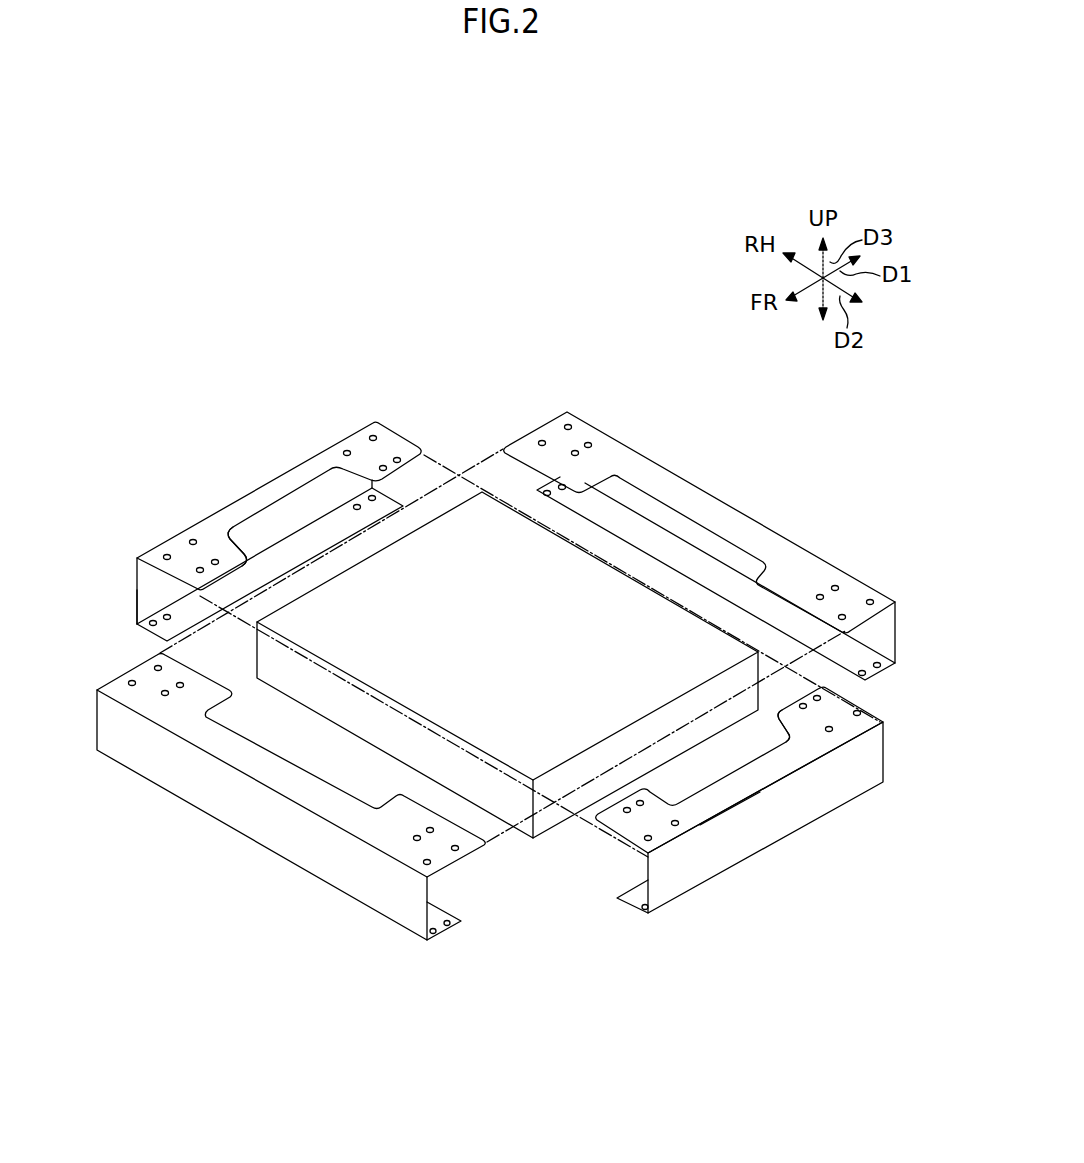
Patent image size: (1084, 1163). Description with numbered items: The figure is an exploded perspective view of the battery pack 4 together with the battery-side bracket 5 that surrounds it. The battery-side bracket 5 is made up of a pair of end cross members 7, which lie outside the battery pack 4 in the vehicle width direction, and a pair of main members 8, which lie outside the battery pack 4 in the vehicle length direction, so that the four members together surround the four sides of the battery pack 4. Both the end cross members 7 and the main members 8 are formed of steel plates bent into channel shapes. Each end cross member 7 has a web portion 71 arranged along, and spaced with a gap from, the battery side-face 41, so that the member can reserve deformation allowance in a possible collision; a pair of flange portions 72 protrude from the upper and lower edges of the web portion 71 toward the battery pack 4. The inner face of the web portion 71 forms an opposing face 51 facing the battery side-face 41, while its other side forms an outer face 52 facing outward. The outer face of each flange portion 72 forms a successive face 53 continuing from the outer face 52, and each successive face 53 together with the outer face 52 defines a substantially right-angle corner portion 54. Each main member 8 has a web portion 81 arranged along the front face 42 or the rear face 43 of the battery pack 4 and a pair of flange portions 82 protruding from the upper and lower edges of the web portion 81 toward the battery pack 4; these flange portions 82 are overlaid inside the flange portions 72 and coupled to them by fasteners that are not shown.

The battery pack 4 is at (456, 546).
The battery side-face 41 is at (641, 746).
The front face 42 is at (376, 739).
The rear face 43 is at (622, 570).
The battery-side bracket 5 is at (288, 370).
The end cross member 7 is at (226, 472).
The opposing face 51 is at (264, 533).
The outer face 52 is at (134, 556).
The successive face 53 is at (330, 476).
The corner portion 54 is at (228, 508).
The web portion 71 is at (120, 580).
The flange portion 72 is at (263, 480).
The main member 8 is at (742, 495).
The web portion 81 is at (883, 633).
The flange portion 82 is at (677, 563).